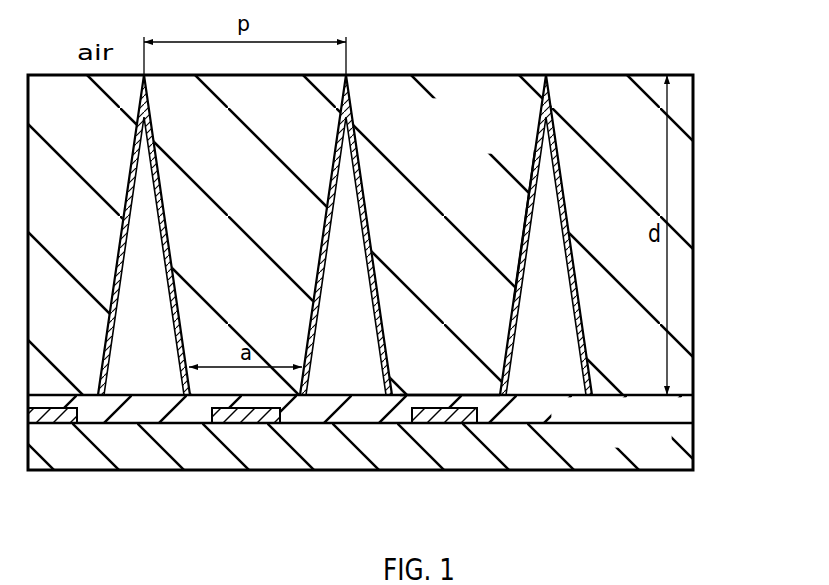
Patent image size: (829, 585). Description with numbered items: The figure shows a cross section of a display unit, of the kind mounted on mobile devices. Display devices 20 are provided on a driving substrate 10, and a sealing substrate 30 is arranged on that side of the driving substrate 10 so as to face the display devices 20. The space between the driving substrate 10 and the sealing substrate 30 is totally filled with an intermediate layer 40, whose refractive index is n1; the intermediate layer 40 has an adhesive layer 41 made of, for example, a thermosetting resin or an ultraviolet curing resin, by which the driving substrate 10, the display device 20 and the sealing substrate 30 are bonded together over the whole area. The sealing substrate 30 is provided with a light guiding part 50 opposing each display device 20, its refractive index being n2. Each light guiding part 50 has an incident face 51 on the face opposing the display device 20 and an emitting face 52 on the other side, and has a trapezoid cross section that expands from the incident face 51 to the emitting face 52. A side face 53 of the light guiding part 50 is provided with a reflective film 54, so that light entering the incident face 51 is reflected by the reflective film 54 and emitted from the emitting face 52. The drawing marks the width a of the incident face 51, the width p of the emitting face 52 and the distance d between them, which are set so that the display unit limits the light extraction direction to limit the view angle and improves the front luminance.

The driving substrate 10 is at (687, 444).
The display device 20 is at (449, 418).
The sealing substrate 30 is at (686, 286).
The intermediate layer 40 is at (694, 398).
The adhesive layer 41 is at (687, 411).
The light guiding part 50 is at (433, 88).
The incident face 51 is at (447, 393).
The emitting face 52 is at (505, 78).
The side face 53 is at (512, 193).
The reflective film 54 is at (528, 247).